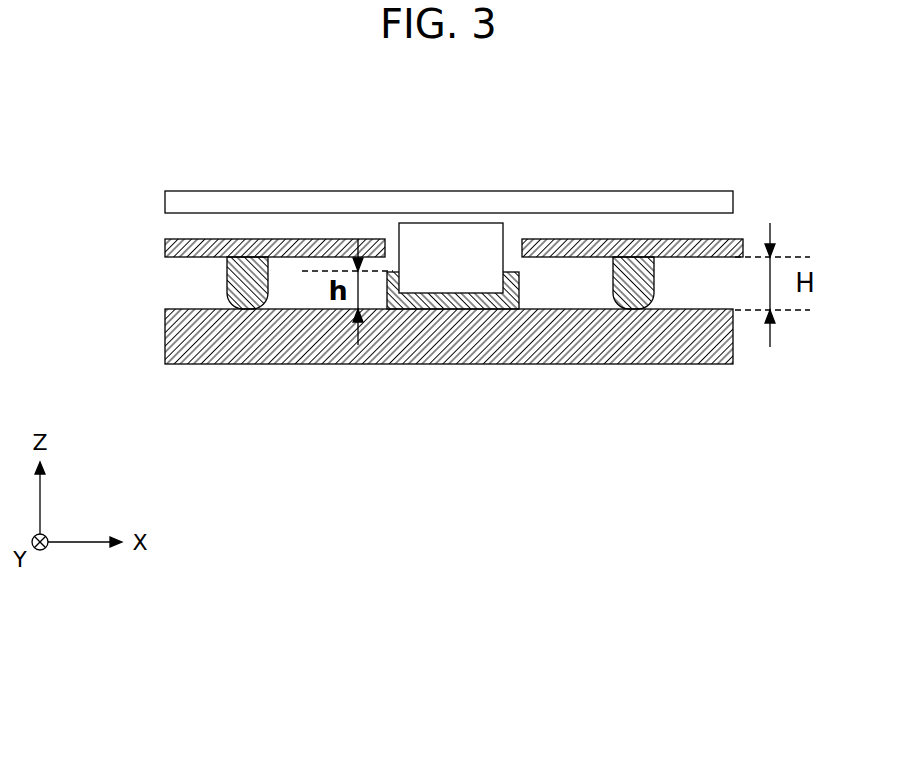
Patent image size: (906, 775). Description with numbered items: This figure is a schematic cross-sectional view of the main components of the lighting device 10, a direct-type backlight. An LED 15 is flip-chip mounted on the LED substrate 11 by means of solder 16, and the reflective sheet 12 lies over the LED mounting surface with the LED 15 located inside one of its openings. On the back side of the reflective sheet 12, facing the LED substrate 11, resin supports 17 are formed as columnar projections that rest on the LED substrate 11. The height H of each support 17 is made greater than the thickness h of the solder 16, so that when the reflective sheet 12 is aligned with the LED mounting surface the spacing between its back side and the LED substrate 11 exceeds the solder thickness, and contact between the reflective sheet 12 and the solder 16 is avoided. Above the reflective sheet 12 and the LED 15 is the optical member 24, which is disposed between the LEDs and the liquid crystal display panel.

The lighting device 10 is at (755, 155).
The LED substrate 11 is at (165, 335).
The reflective sheet 12 is at (342, 239).
The LED 15 is at (447, 237).
The solder 16 is at (452, 305).
The support 17 is at (248, 257).
The optical member 24 is at (165, 199).